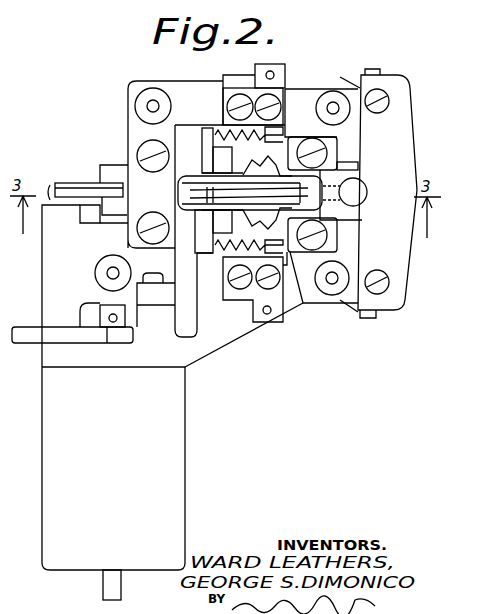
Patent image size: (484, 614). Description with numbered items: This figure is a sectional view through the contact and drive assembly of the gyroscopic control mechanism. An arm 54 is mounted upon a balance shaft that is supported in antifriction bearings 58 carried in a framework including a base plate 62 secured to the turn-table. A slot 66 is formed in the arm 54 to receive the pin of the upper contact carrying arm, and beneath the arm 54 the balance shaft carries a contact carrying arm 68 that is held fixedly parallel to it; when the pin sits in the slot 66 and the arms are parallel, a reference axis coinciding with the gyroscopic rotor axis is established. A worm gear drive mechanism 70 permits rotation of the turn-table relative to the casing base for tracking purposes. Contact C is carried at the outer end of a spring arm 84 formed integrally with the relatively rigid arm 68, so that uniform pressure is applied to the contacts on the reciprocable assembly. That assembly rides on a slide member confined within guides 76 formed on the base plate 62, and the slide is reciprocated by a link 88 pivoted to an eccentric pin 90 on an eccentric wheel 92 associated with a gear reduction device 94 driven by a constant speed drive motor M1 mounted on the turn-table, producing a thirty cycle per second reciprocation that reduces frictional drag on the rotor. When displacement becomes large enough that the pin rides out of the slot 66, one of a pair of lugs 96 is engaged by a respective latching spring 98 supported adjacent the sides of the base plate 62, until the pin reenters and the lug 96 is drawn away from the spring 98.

The arm 54 is at (275, 172).
The antifriction bearings 58 is at (365, 185).
The base plate 62 is at (214, 340).
The slot 66 is at (278, 177).
The contact carrying arm 68 is at (180, 185).
The worm gear drive mechanism 70 is at (56, 183).
The guides 76 is at (135, 143).
The spring arm 84 is at (187, 203).
The link 88 is at (100, 168).
The eccentric pin 90 is at (72, 205).
The eccentric wheel 92 is at (46, 185).
The gear reduction device 94 is at (67, 262).
The lugs 96 is at (303, 307).
The latching springs 98 is at (354, 305).
The constant speed drive motor M1 is at (52, 427).